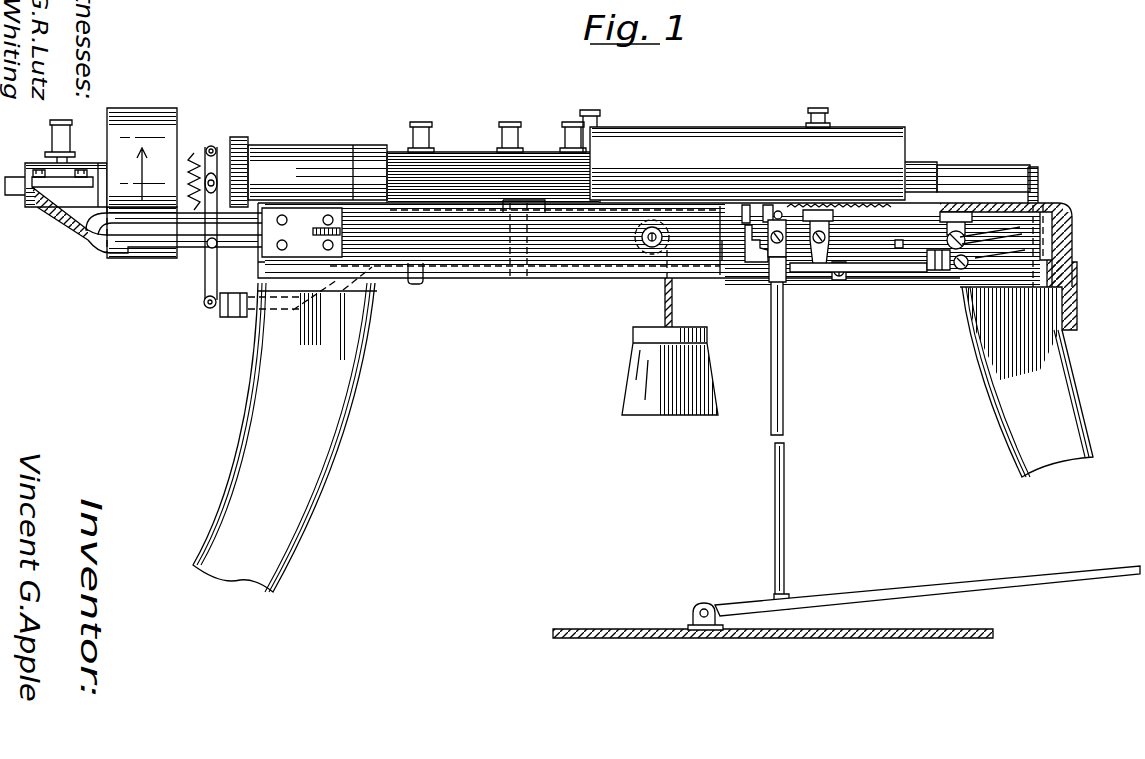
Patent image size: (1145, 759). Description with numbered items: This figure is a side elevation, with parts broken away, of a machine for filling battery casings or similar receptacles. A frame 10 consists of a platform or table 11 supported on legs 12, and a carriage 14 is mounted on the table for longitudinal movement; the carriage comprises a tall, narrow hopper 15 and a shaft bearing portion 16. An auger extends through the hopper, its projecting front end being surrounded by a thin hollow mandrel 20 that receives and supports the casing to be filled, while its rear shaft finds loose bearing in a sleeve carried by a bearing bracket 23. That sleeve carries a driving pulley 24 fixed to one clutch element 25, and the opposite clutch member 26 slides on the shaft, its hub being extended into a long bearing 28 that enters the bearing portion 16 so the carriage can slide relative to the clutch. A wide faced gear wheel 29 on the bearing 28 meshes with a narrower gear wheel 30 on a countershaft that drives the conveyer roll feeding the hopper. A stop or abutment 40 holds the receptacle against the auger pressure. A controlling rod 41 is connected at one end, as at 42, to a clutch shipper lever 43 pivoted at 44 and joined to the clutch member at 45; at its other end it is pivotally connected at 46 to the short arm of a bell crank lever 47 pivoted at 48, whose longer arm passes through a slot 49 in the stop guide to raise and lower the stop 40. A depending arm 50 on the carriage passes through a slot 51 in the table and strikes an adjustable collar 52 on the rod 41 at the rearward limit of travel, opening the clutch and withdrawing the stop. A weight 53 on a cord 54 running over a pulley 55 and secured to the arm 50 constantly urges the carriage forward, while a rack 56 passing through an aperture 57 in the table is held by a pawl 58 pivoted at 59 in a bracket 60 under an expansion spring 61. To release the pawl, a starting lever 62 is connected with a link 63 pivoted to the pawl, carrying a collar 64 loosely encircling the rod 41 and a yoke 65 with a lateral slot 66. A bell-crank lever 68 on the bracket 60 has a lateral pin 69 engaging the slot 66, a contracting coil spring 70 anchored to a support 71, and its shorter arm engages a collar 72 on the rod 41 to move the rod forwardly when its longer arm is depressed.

The frame 10 is at (644, 256).
The platform or table 11 is at (916, 229).
The legs 12 is at (367, 337).
The carriage 14 is at (887, 217).
The hopper 15 is at (718, 132).
The shaft bearing portion 16 is at (465, 165).
The hollow mandrel 20 is at (973, 177).
The bearing bracket 23 is at (152, 242).
The driving pulley 24 is at (162, 133).
The clutch element 25 is at (183, 158).
The clutch member 26 is at (216, 148).
The long bearing 28 is at (340, 178).
The wide faced gear wheel 29 is at (281, 186).
The gear wheel 30 is at (245, 147).
The stop or abutment 40 is at (1037, 170).
The controlling rod 41 is at (877, 272).
The connection 42 is at (207, 312).
The clutch shipper lever 43 is at (209, 270).
The pivot 44 is at (214, 248).
The pivotal connection 45 is at (217, 183).
The pivotal connection 46 is at (960, 279).
The bell crank lever 47 is at (968, 258).
The pivot 48 is at (903, 246).
The slot 49 is at (1020, 240).
The depending arm 50 is at (551, 240).
The slot 51 is at (413, 234).
The adjustable collar 52 is at (420, 281).
The weight 53 is at (700, 337).
The cord 54 is at (673, 311).
The pulley 55 is at (663, 235).
The rack 56 is at (853, 203).
The aperture 57 is at (892, 232).
The pawl 58 is at (782, 215).
The pivot 59 is at (798, 217).
The bracket 60 is at (965, 231).
The expansion spring 61 is at (765, 208).
The starting lever 62 is at (888, 593).
The link 63 is at (785, 478).
The collar 64 is at (782, 278).
The yoke 65 is at (775, 257).
The lateral slot 66 is at (740, 262).
The bell-crank lever 68 is at (837, 239).
The lateral pin 69 is at (770, 250).
The contracting coil spring 70 is at (724, 253).
The support 71 is at (743, 205).
The collar 72 is at (838, 281).